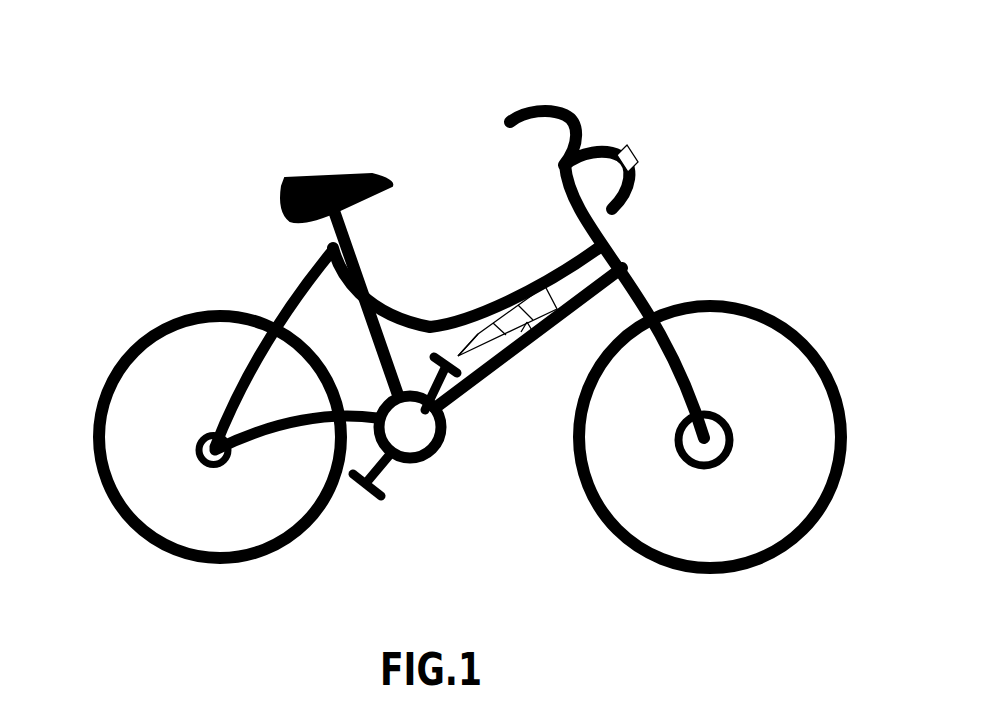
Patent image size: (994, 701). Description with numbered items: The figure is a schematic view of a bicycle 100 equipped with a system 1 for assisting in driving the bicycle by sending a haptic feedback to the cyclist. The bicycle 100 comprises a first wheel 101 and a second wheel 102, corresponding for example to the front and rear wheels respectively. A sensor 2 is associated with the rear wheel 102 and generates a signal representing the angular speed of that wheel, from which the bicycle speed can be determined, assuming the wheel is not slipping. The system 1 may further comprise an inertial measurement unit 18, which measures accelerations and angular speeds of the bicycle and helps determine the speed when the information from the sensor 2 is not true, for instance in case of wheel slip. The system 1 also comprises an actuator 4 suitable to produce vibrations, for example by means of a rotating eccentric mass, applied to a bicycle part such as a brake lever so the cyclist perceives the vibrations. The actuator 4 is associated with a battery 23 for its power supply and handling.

The bicycle 100 is at (648, 112).
The first wheel 101 is at (673, 525).
The second wheel 102 is at (287, 497).
The sensor 2 is at (205, 456).
The actuator 4 is at (640, 160).
The system for assisting in driving the bicycle 1 is at (527, 322).
The battery 23 is at (493, 340).
The inertial measurement unit 18 is at (477, 358).